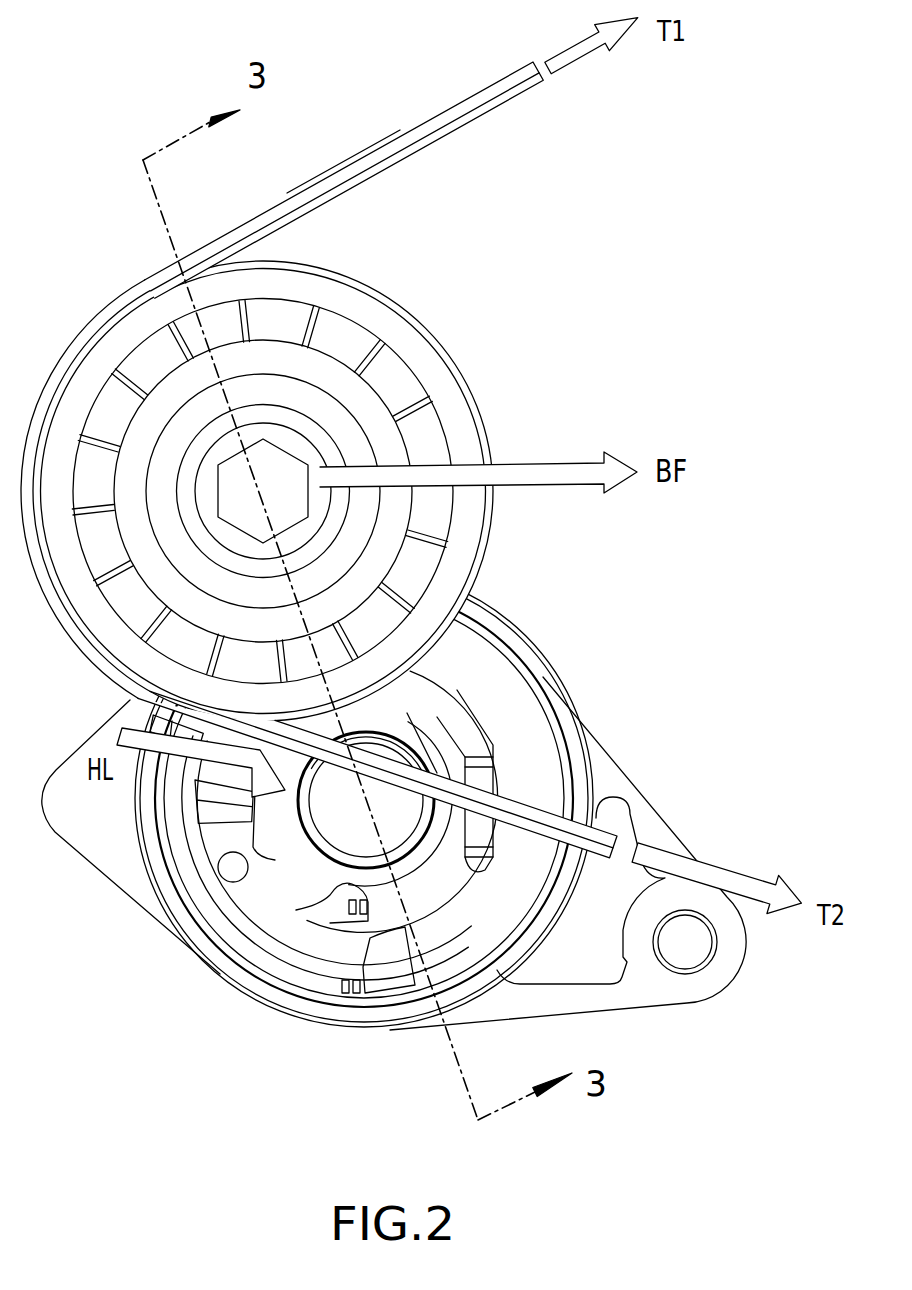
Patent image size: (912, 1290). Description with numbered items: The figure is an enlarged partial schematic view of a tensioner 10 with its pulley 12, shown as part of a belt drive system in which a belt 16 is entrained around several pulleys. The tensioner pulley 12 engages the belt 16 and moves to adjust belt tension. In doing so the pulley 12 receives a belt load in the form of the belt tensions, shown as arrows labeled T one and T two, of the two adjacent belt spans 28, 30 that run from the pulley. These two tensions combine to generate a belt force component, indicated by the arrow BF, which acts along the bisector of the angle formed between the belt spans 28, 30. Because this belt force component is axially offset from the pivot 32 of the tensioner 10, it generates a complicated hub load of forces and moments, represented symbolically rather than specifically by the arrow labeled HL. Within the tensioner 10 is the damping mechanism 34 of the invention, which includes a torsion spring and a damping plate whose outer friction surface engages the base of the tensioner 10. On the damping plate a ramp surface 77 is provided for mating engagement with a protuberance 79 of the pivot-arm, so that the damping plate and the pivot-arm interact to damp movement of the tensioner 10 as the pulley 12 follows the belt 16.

The tensioner 10 is at (357, 1033).
The pulley 12 is at (395, 293).
The belt 16 is at (430, 150).
The belt span 28 is at (287, 193).
The belt span 30 is at (500, 840).
The pivot 32 is at (313, 860).
The damping mechanism 34 is at (498, 680).
The ramp surface 77 is at (345, 903).
The protuberance 79 is at (340, 912).